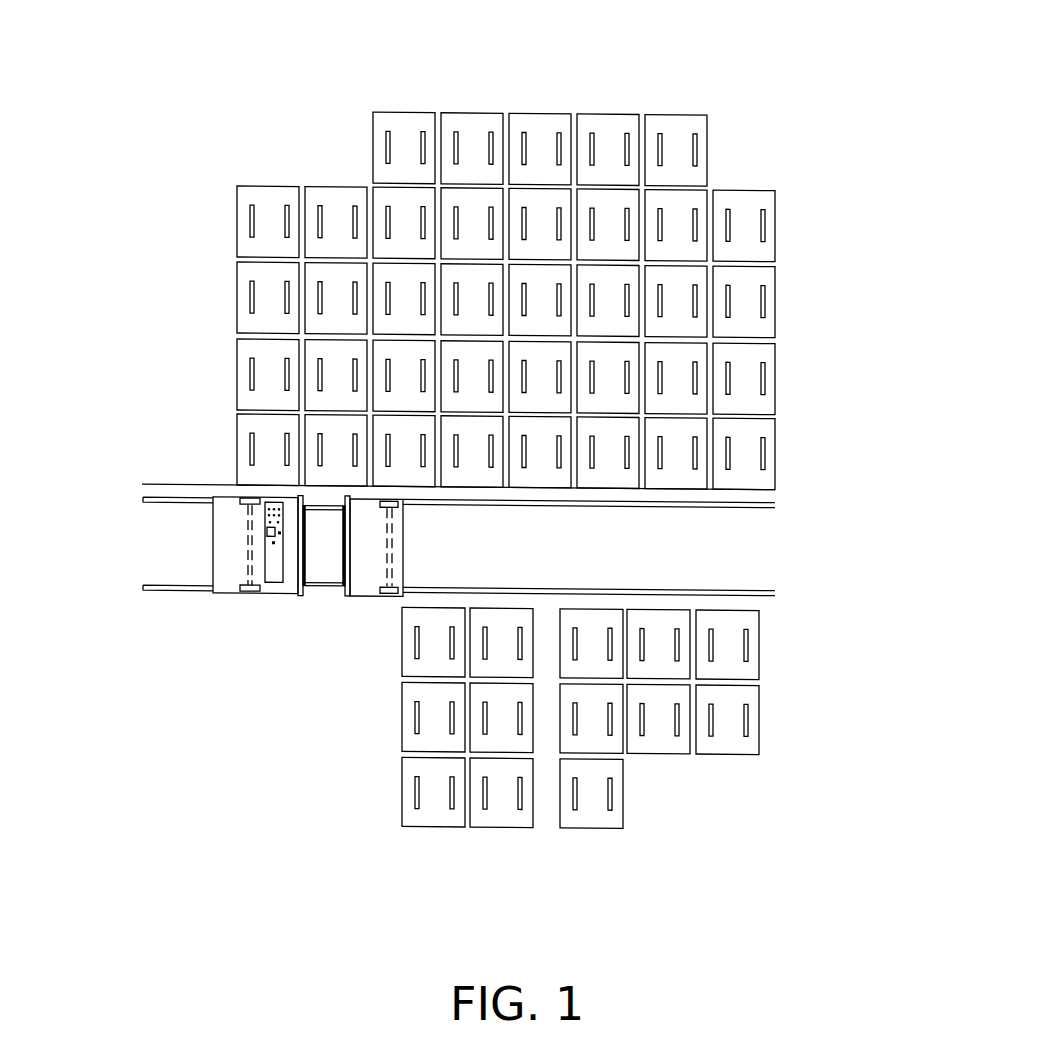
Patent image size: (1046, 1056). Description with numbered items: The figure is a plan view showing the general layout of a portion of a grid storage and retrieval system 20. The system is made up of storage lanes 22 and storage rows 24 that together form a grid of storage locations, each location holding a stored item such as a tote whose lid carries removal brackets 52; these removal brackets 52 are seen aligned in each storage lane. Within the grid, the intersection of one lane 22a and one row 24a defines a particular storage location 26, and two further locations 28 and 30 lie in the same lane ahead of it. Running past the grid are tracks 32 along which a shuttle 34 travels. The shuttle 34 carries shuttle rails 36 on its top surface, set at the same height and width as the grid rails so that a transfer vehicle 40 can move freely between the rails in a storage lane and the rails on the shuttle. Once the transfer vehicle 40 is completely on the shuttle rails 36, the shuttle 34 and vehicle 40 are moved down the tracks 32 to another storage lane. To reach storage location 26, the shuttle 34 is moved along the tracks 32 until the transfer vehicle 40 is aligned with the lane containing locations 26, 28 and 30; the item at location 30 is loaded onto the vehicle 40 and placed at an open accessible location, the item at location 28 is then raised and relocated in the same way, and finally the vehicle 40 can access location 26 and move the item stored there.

The grid storage and retrieval system 20 is at (330, 172).
The storage lanes 22 is at (610, 104).
The lane 22a is at (560, 511).
The storage rows 24 is at (213, 354).
The row 24a is at (798, 295).
The storage location 26 is at (468, 293).
The location 28 is at (541, 375).
The location 30 is at (541, 450).
The tracks 32 is at (143, 498).
The shuttle 34 is at (233, 539).
The shuttle rails 36 is at (298, 593).
The transfer vehicle 40 is at (327, 561).
The removal brackets 52 is at (420, 130).